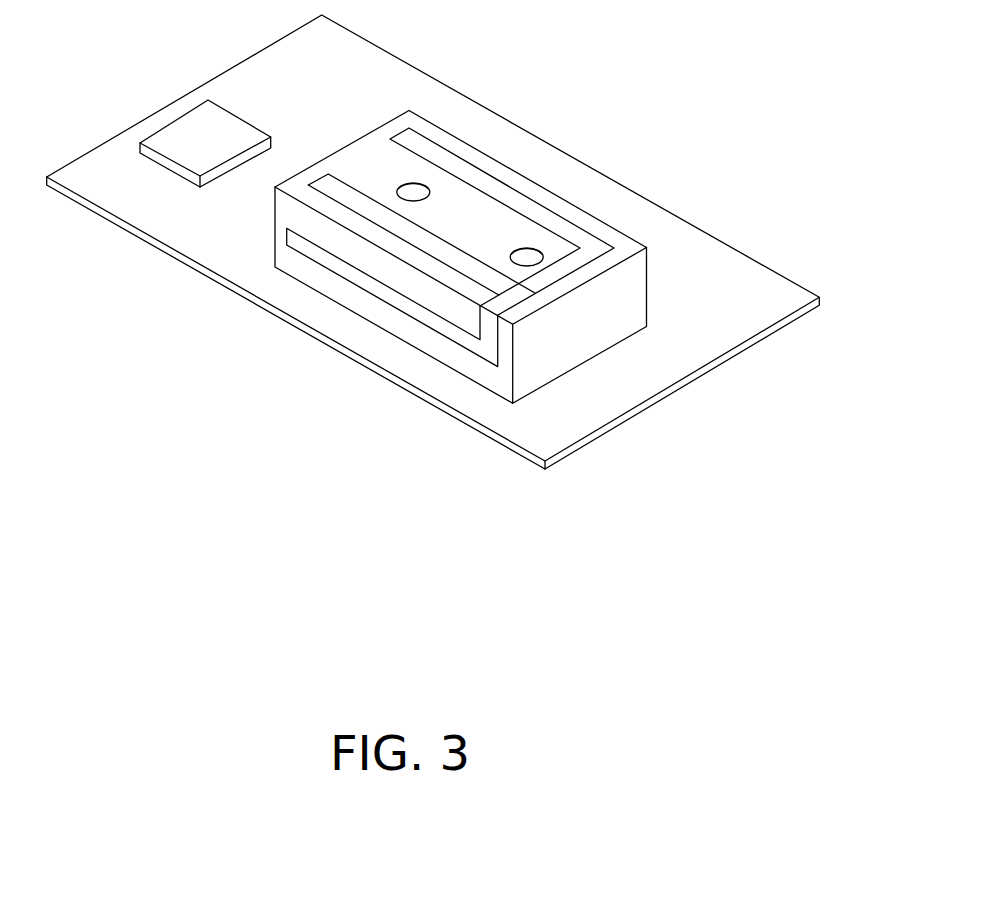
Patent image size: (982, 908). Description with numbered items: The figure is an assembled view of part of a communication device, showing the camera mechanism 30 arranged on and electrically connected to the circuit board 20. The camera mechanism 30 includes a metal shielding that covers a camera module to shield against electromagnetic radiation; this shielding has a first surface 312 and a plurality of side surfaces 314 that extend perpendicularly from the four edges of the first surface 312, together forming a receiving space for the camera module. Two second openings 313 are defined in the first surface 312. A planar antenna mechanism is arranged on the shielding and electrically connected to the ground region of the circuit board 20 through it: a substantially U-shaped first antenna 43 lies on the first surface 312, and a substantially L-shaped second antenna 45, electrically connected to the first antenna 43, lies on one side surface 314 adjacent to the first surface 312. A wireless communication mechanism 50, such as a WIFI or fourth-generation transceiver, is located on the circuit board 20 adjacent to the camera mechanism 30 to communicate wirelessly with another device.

The circuit board 20 is at (702, 267).
The camera mechanism 30 is at (537, 365).
The first antenna 43 is at (527, 207).
The second antenna 45 is at (367, 282).
The wireless communication mechanism 50 is at (182, 133).
The first surface 312 is at (372, 165).
The second opening 313 is at (417, 193).
The side surface 314 is at (572, 333).